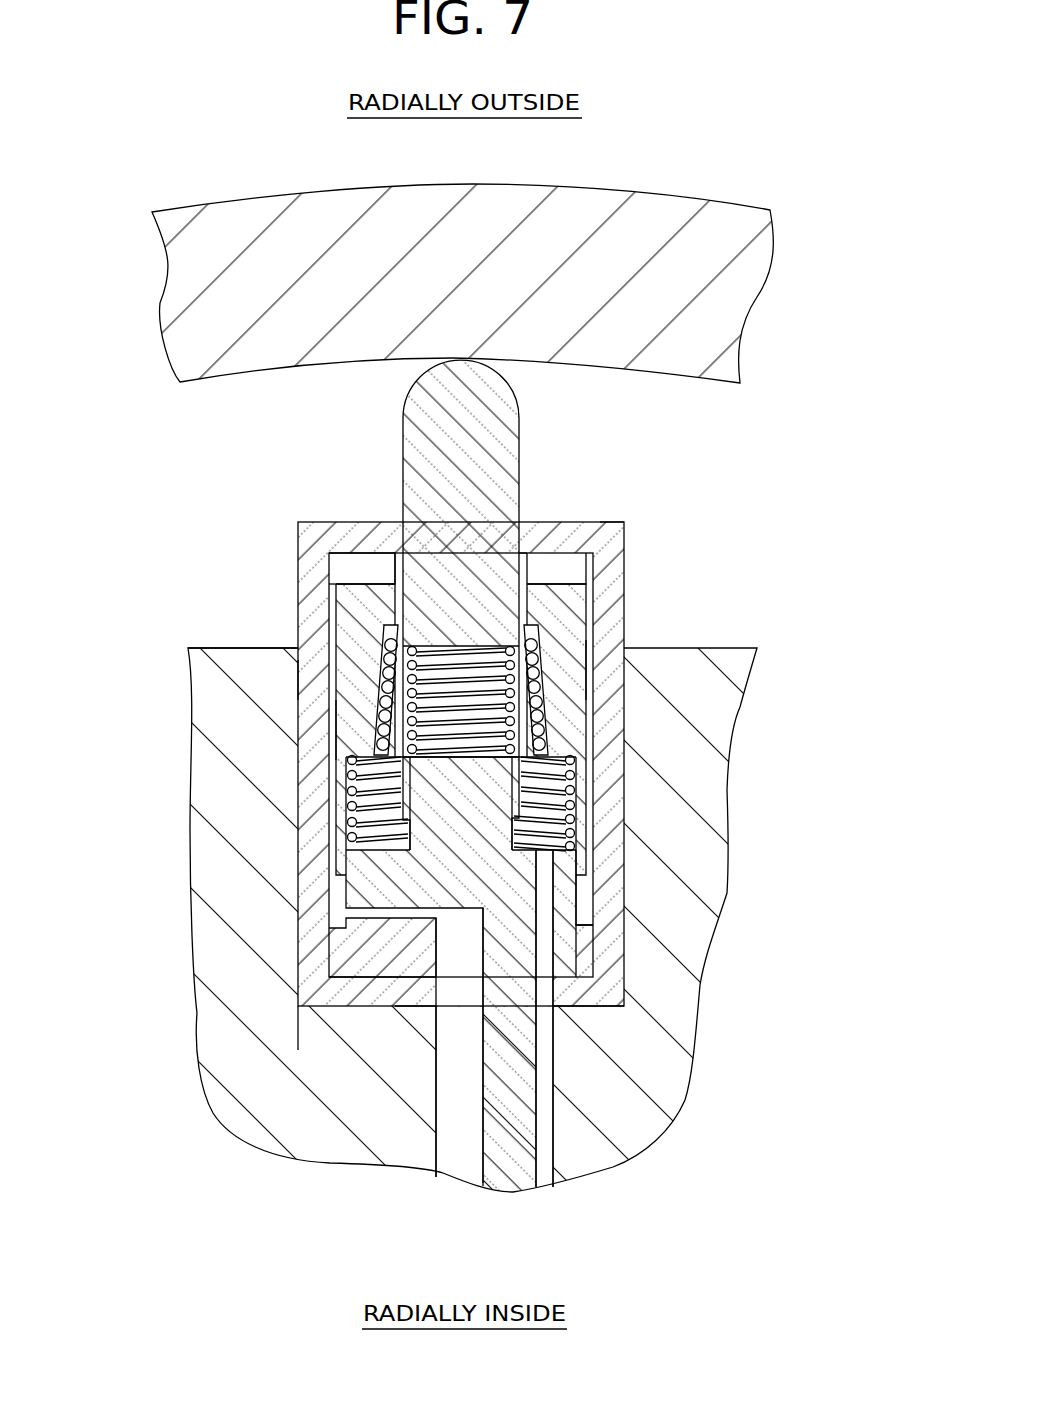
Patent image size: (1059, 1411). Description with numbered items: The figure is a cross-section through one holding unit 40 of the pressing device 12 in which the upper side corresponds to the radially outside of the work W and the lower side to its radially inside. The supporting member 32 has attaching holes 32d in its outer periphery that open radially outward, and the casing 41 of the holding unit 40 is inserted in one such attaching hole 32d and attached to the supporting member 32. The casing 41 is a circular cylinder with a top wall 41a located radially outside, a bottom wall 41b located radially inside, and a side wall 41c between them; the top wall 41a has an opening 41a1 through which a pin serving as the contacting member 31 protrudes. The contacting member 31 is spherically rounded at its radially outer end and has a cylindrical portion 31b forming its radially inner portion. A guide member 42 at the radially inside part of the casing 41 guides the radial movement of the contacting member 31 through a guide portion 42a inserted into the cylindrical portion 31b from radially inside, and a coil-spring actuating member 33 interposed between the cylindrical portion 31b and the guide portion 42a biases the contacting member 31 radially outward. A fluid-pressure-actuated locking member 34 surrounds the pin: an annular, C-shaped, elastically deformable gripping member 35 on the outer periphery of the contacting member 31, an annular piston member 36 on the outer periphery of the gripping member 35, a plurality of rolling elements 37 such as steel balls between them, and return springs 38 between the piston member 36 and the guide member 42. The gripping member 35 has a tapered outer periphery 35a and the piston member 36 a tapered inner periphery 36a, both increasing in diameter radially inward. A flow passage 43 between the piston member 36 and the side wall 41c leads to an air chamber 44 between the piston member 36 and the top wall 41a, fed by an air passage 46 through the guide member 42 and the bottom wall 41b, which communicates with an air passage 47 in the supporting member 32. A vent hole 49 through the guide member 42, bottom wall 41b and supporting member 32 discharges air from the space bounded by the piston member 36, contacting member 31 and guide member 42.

The work W is at (332, 215).
The pressing device 12 is at (197, 594).
The contacting member 31 is at (495, 452).
The cylindrical portion 31b is at (527, 728).
The supporting member 32 is at (222, 882).
The attaching hole 32d is at (337, 1006).
The actuating member 33 is at (465, 670).
The locking member 34 is at (319, 689).
The gripping member 35 is at (377, 657).
The tapered outer periphery 35a is at (530, 690).
The piston member 36 is at (357, 715).
The tapered inner periphery 36a is at (580, 640).
The rolling elements 37 is at (355, 727).
The return springs 38 is at (355, 1000).
The holding unit 40 is at (650, 562).
The casing 41 is at (292, 551).
The top wall 41a is at (343, 530).
The opening 41a1 is at (513, 542).
The bottom wall 41b is at (602, 1006).
The side wall 41c is at (460, 797).
The guide member 42 is at (508, 1006).
The guide portion 42a is at (520, 765).
The flow passage 43 is at (333, 597).
The air chamber 44 is at (365, 572).
The air passage 46 is at (402, 1006).
The air passage 47 is at (462, 1140).
The vent hole 49 is at (548, 948).